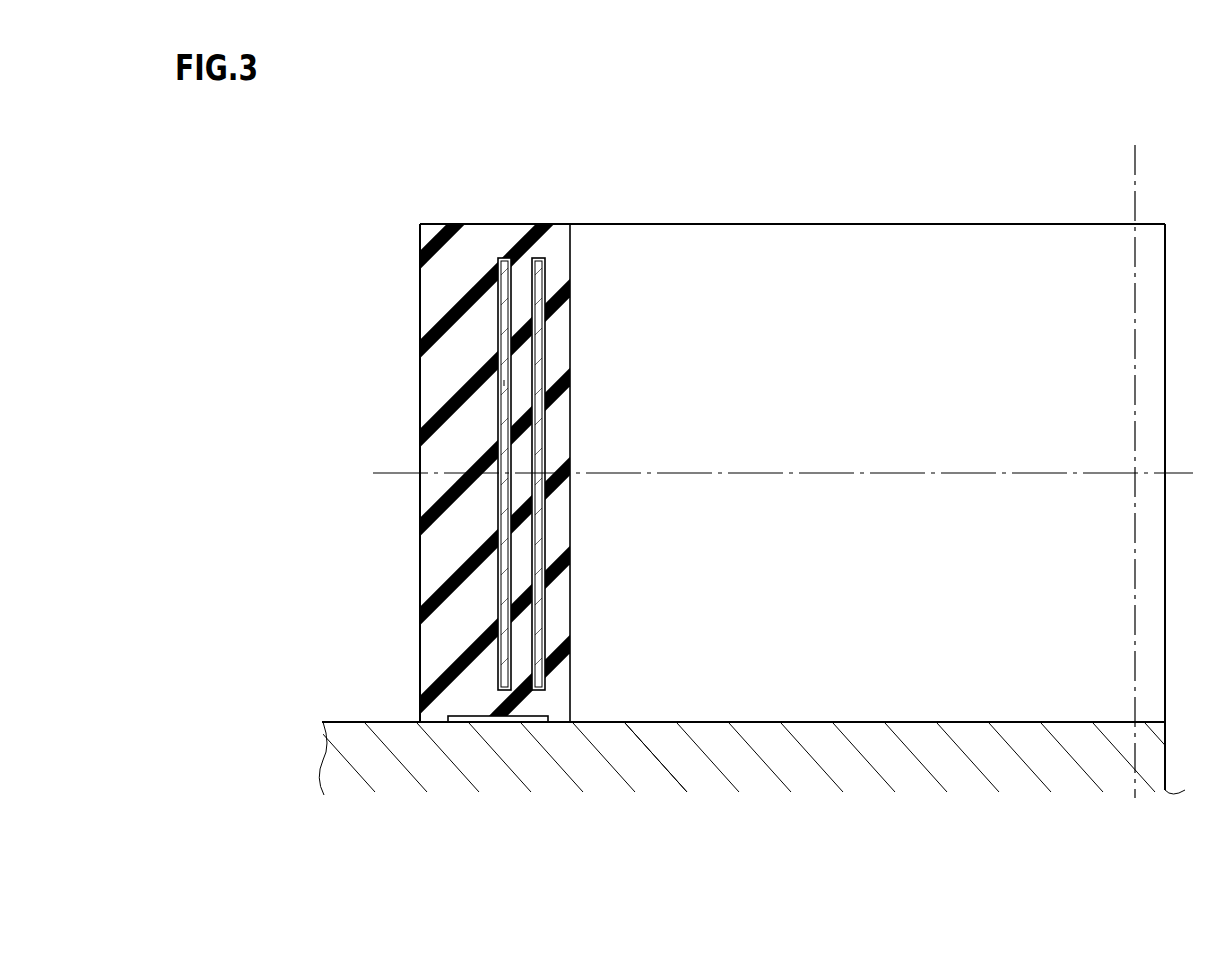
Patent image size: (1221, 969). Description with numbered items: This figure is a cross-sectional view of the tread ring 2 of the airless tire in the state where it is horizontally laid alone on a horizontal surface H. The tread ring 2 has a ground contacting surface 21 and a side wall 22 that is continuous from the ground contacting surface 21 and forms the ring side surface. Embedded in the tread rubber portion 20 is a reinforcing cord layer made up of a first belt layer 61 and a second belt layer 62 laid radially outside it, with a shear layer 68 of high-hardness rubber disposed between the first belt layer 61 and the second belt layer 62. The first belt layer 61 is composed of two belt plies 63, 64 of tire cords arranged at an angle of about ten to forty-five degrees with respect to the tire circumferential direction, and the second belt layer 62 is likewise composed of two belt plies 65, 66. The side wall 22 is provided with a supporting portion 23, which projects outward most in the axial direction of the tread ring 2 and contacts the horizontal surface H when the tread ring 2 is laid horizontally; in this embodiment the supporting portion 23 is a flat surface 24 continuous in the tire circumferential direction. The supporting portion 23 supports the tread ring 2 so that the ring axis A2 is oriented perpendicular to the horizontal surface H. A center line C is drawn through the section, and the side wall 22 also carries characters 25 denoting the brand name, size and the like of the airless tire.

The tread ring 2 is at (787, 221).
The tread rubber portion 20 is at (435, 543).
The ground contacting surface 21 is at (418, 392).
The side wall 22 is at (805, 725).
The supporting portion 23 is at (437, 725).
The flat surface 24 is at (663, 725).
The characters 25 is at (518, 725).
The first belt layer 61 is at (592, 395).
The second belt layer 62 is at (471, 395).
The belt ply 63 is at (547, 327).
The belt ply 64 is at (537, 257).
The belt ply 65 is at (510, 257).
The belt ply 66 is at (497, 293).
The shear layer 68 is at (523, 382).
The horizontal surface H is at (345, 722).
The center axis C is at (771, 476).
The ring axis A2 is at (1135, 196).